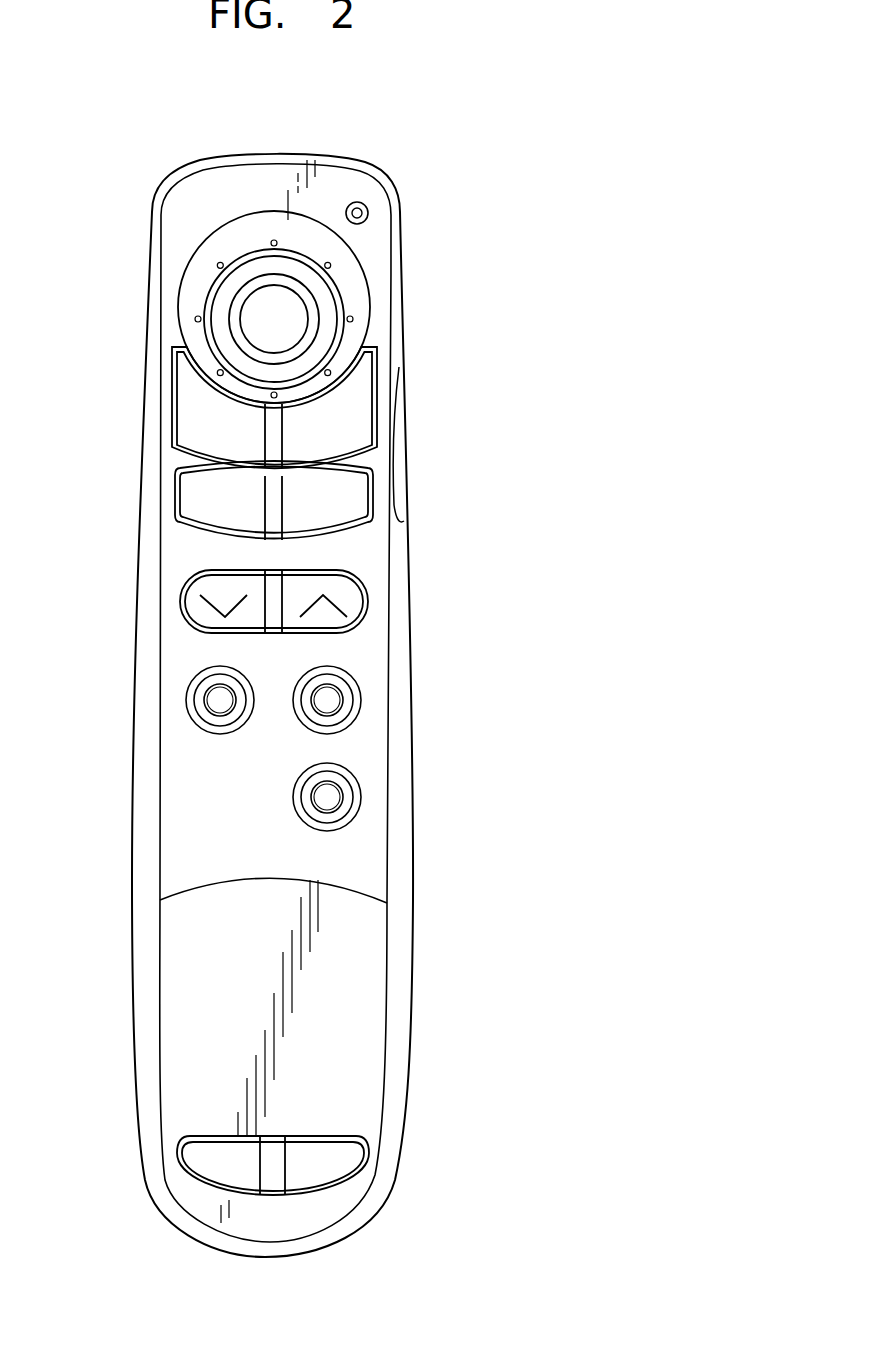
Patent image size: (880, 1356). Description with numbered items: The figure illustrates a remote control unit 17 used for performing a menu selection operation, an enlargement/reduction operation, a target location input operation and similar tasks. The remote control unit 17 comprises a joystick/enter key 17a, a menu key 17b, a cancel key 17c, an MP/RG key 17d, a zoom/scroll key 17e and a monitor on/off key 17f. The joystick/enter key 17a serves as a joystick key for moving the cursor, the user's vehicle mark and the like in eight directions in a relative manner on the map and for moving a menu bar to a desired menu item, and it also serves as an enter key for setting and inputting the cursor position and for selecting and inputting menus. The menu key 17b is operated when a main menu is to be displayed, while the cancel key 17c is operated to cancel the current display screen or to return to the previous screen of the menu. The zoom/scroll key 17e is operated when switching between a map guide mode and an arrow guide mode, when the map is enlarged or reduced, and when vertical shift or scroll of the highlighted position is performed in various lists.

The remote control unit 17 is at (424, 189).
The joystick/enter key 17a is at (277, 307).
The menu key 17b is at (192, 405).
The cancel key 17c is at (358, 405).
The MP/RG key 17d is at (358, 493).
The zoom/scroll key 17e is at (348, 598).
The monitor on/off key 17f is at (273, 1180).